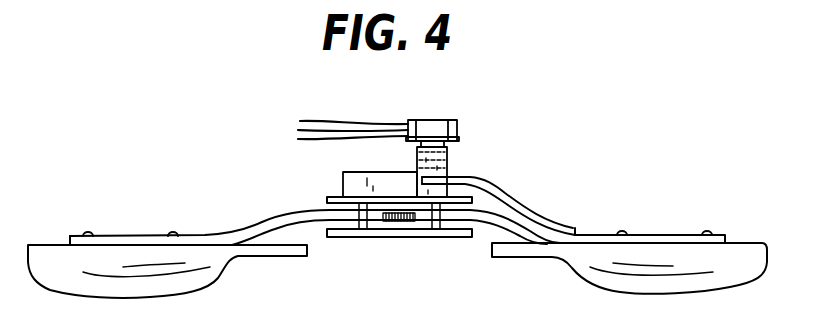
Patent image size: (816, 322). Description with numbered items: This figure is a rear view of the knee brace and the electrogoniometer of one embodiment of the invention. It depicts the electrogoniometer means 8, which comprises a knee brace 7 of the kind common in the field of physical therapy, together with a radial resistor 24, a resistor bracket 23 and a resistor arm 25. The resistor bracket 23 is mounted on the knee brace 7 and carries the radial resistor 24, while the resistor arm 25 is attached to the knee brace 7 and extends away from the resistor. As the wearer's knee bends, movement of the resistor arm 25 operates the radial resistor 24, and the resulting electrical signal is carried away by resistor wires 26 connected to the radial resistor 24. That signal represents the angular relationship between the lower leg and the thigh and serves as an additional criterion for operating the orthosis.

The knee brace 7 is at (245, 229).
The electrogoniometer means 8 is at (250, 105).
The resistor bracket 23 is at (343, 186).
The radial resistor 24 is at (458, 126).
The resistor arm 25 is at (487, 180).
The resistor wires 26 is at (348, 120).